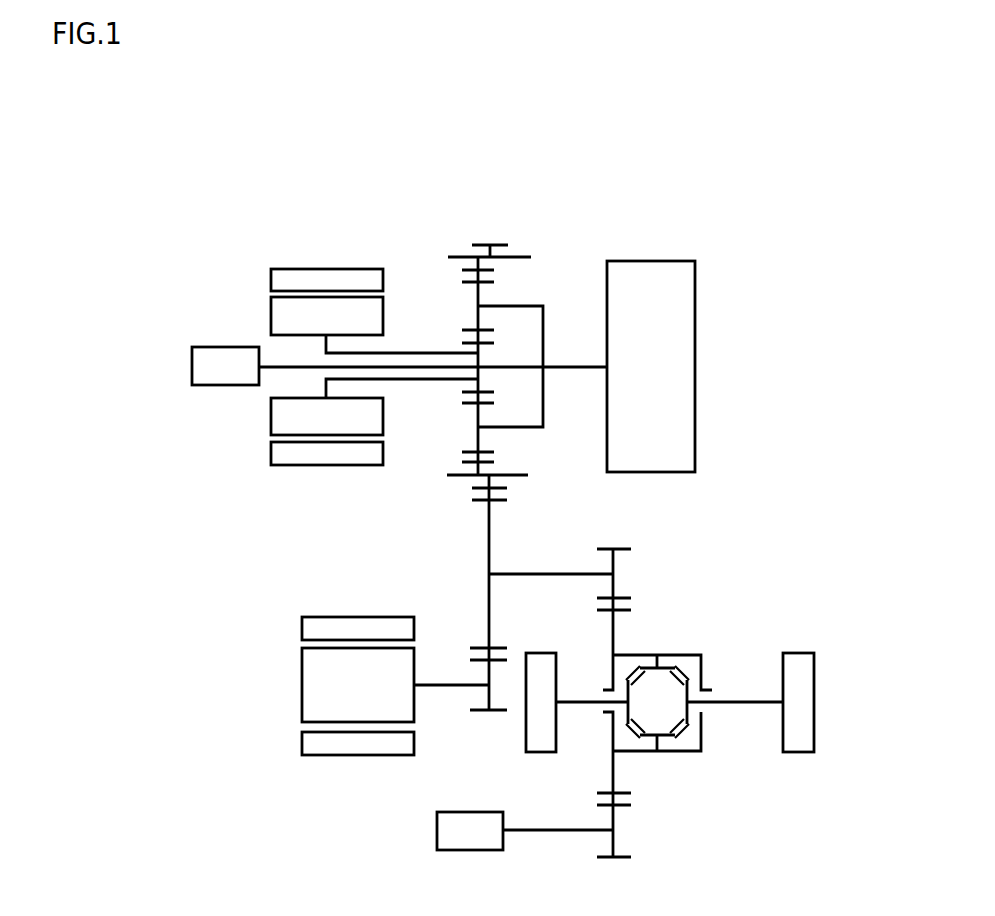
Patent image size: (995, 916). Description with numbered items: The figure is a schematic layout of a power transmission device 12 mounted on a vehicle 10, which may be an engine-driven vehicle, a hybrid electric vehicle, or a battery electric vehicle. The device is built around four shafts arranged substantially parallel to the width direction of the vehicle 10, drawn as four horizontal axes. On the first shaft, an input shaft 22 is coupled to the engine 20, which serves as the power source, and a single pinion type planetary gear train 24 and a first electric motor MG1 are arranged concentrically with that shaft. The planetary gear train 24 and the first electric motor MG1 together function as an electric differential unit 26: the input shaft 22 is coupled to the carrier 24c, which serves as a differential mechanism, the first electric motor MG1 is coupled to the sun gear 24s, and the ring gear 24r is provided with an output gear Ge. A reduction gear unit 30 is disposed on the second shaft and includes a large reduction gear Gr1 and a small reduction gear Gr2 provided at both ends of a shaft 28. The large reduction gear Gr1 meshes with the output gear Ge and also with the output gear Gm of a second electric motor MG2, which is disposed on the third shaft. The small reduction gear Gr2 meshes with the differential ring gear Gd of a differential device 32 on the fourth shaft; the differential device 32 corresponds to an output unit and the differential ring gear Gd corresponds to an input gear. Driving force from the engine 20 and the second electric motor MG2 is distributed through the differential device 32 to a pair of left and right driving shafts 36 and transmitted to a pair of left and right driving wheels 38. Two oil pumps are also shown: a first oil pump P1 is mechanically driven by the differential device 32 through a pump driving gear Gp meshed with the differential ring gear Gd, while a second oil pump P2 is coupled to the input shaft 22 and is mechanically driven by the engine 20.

The vehicle 10 is at (668, 136).
The power transmission device 12 is at (333, 172).
The engine 20 is at (686, 318).
The input shaft 22 is at (575, 370).
The planetary gear train 24 is at (416, 468).
The sun gear 24s is at (462, 343).
The carrier 24c is at (518, 306).
The ring gear 24r is at (494, 462).
The electric differential unit 26 is at (512, 195).
The shaft 28 is at (541, 578).
The reduction gear unit 30 is at (680, 561).
The differential device 32 is at (694, 770).
The driving shafts 36 is at (580, 707).
The driving wheels 38 is at (538, 742).
The output gear Ge is at (483, 243).
The large reduction gear Gr1 is at (498, 498).
The small reduction gear Gr2 is at (618, 549).
The differential ring gear Gd is at (630, 610).
The output gear Gm is at (476, 712).
The pump driving gear Gp is at (605, 858).
The first electric motor MG1 is at (374, 354).
The second electric motor MG2 is at (379, 676).
The first oil pump P1 is at (525, 831).
The second oil pump P2 is at (225, 366).